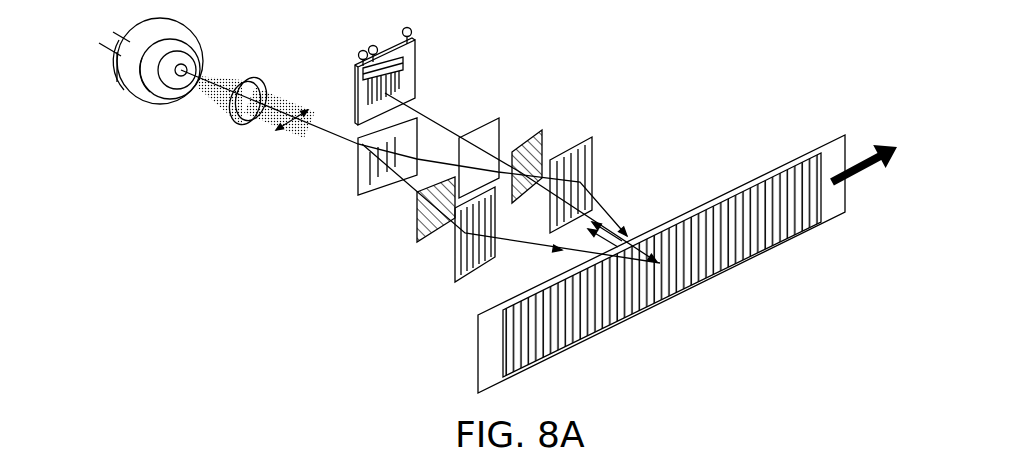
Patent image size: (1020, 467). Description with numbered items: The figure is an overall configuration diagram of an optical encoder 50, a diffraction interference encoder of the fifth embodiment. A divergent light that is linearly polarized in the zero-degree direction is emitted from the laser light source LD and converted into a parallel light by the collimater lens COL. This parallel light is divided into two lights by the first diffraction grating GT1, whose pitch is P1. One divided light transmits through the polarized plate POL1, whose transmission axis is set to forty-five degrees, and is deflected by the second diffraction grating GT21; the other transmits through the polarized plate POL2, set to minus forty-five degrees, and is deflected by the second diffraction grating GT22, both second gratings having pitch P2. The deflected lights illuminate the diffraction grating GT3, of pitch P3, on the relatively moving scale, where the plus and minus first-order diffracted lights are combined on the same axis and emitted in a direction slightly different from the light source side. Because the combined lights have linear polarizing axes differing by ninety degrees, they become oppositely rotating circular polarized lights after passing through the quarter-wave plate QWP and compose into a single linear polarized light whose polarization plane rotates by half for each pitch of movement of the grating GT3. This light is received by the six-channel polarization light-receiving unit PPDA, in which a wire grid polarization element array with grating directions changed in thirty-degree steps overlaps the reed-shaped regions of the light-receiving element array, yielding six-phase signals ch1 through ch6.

The optical encoder 50 is at (733, 67).
The laser light source LD is at (139, 65).
The collimater lens COL is at (248, 113).
The six-channel polarization light-receiving unit PPDA is at (406, 64).
The first diffraction grating GT1 is at (357, 156).
The quarter-wave plate QWP is at (487, 142).
The polarized plate POL1 is at (394, 209).
The second diffraction grating GT21 is at (437, 240).
The polarized plate POL2 is at (549, 153).
The second diffraction grating GT22 is at (604, 185).
The diffraction grating GT3 is at (687, 264).